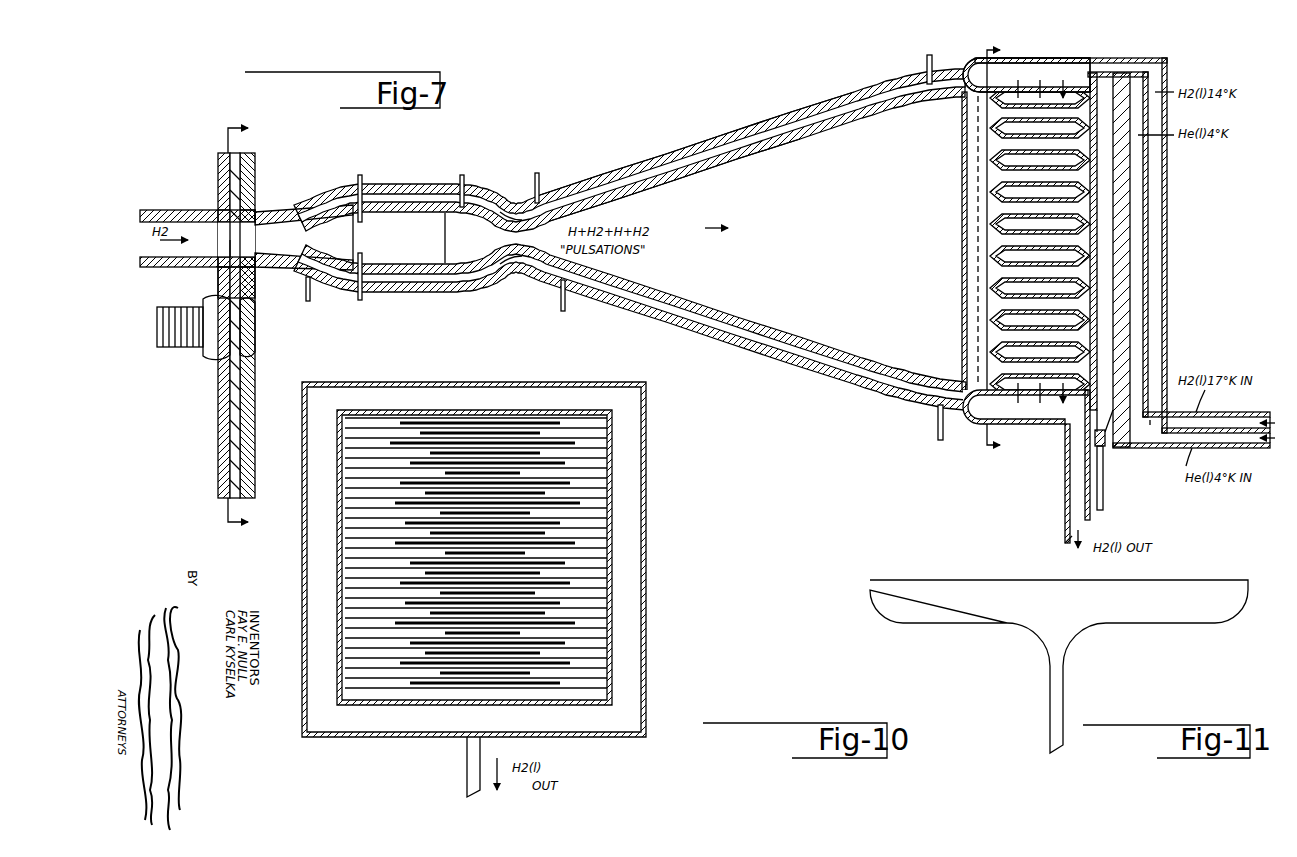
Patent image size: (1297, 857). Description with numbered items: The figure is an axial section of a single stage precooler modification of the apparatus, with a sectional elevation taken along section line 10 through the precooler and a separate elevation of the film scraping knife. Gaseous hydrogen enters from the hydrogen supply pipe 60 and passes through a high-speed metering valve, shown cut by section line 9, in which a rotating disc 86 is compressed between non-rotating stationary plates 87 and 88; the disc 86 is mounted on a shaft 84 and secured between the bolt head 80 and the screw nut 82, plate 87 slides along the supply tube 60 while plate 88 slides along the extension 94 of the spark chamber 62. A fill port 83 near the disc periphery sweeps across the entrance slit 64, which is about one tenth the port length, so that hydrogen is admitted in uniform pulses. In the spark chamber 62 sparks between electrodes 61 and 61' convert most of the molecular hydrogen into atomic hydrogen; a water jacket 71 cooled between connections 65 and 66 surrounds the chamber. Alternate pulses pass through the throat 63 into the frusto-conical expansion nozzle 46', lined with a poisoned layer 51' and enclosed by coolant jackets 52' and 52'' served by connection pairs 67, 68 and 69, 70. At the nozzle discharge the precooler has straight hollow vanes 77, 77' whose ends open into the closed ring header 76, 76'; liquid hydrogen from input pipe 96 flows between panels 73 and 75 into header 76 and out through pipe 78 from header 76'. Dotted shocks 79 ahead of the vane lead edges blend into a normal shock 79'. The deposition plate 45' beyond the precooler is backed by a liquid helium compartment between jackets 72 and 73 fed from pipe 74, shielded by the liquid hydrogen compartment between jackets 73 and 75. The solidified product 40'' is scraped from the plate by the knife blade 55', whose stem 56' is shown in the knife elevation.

In FIG. 7, the section line 9— 9 is at (247, 326).
In FIG. 7, the section line 10— 10 is at (1006, 247).
In FIG. 7, the deposition plate 45' is at (1156, 260).
In FIG. 7, the expansion nozzle 46' is at (675, 180).
In FIG. 7, the poisoned lining layer 51' is at (631, 154).
In FIG. 7, the coolant jacket 52' is at (629, 150).
In FIG. 7, the coolant jacket 52'' is at (697, 143).
In FIG. 7, the knife blade 55' is at (1124, 451).
In FIG. 11, the knife blade 55' is at (1068, 608).
In FIG. 7, the knife blade stem 56' is at (1125, 478).
In FIG. 11, the knife blade stem 56' is at (1056, 688).
In FIG. 7, the hydrogen supply pipe 60 is at (168, 268).
In FIG. 7, the electrode 61 is at (376, 190).
In FIG. 7, the electrode 61' is at (372, 292).
In FIG. 7, the spark chamber 62 is at (400, 250).
In FIG. 7, the throat 63 is at (502, 240).
In FIG. 7, the entrance slit 64 is at (258, 232).
In FIG. 7, the water jacket connection 65 is at (308, 302).
In FIG. 7, the water jacket connection 66 is at (464, 178).
In FIG. 7, the coolant connection 67 is at (563, 312).
In FIG. 7, the coolant connection 68 is at (926, 60).
In FIG. 7, the coolant connection 69 is at (539, 176).
In FIG. 7, the coolant connection 70 is at (938, 425).
In FIG. 7, the water jacket 71 is at (425, 292).
In FIG. 7, the jacket 72 is at (1132, 212).
In FIG. 7, the jacket 73 is at (1150, 224).
In FIG. 7, the liquid helium feed pipe 74 is at (1225, 448).
In FIG. 7, the jacket 75 is at (1167, 250).
In FIG. 7, the closed ring header 76 is at (1026, 78).
In FIG. 10, the closed ring header 76 is at (491, 559).
In FIG. 7, the closed ring header 76' is at (1026, 403).
In FIG. 10, the closed ring header 76' is at (474, 569).
In FIG. 7, the hollow vane 77 is at (1009, 123).
In FIG. 10, the hollow vane 77 is at (516, 553).
In FIG. 7, the hollow vane 77' is at (1009, 155).
In FIG. 10, the hollow vane 77' is at (518, 461).
In FIG. 7, the liquid hydrogen output pipe 78 is at (1090, 518).
In FIG. 10, the liquid hydrogen output pipe 78 is at (467, 780).
In FIG. 7, the shock 79 is at (957, 241).
In FIG. 7, the normal shock 79' is at (953, 241).
In FIG. 7, the bolt head 80 is at (255, 345).
In FIG. 7, the screw nut 82 is at (208, 356).
In FIG. 7, the fill port 83 is at (230, 245).
In FIG. 7, the shaft 84 is at (165, 347).
In FIG. 7, the rotating disc 86 is at (240, 400).
In FIG. 7, the stationary plate 87 is at (218, 186).
In FIG. 7, the stationary plate 88 is at (255, 160).
In FIG. 7, the extension 94 is at (255, 280).
In FIG. 7, the liquid hydrogen input pipe 96 is at (1240, 412).
In FIG. 7, the end product 40'' is at (1101, 419).